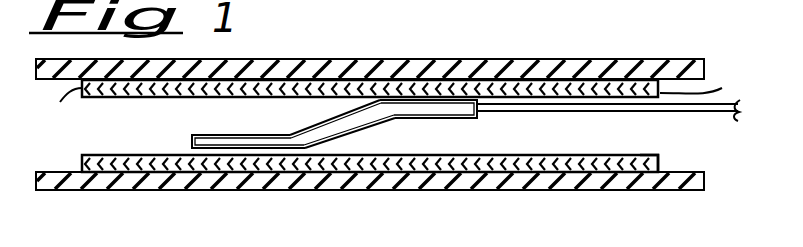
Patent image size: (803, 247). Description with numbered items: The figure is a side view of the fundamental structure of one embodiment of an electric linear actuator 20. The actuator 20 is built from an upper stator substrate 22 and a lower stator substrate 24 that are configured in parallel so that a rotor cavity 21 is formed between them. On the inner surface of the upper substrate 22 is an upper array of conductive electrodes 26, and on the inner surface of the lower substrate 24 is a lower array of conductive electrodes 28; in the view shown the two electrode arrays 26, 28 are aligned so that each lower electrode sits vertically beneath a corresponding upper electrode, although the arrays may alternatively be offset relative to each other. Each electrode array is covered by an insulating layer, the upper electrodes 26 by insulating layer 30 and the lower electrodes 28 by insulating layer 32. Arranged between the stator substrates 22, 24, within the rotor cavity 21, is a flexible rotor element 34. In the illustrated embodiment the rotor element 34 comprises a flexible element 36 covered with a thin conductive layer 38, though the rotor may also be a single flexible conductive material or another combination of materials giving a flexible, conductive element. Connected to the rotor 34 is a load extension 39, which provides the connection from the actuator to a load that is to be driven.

The electric linear actuator 20 is at (94, 201).
The rotor cavity 21 is at (474, 140).
The upper stator substrate 22 is at (533, 60).
The lower stator substrate 24 is at (632, 191).
The upper array of conductive electrodes 26 is at (182, 91).
The lower array of conductive electrodes 28 is at (143, 155).
The insulating layer 30 is at (393, 97).
The insulating layer 32 is at (656, 165).
The flexible rotor element 34 is at (362, 133).
The flexible element 36 is at (436, 114).
The thin conductive layer 38 is at (305, 133).
The load extension 39 is at (736, 118).